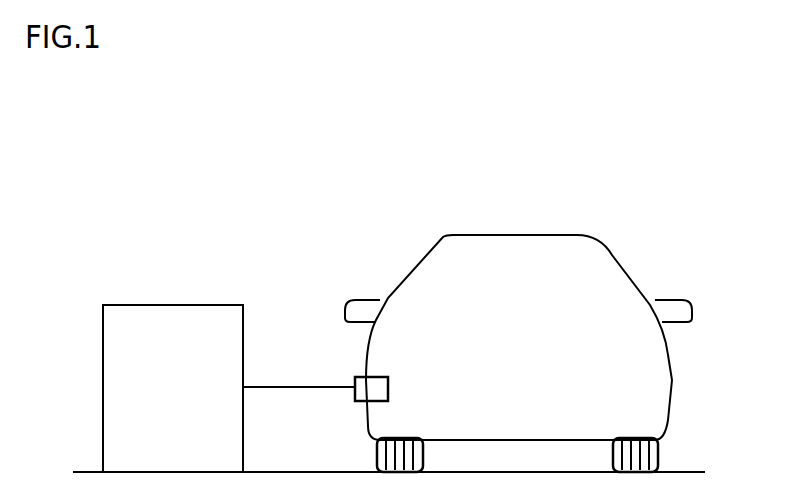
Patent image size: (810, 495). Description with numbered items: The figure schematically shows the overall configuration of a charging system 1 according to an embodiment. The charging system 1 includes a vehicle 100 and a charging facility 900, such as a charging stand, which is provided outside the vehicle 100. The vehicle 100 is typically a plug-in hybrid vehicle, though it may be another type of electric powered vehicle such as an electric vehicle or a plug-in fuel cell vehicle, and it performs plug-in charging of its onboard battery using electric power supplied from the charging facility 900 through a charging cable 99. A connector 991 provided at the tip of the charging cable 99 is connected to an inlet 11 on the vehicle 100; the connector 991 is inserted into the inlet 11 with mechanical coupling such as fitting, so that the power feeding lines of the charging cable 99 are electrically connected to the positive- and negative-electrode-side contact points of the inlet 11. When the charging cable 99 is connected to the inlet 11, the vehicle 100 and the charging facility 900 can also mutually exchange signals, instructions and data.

The charging system 1 is at (244, 173).
The charging facility 900 is at (122, 305).
The charging cable 99 is at (282, 385).
The connector 991 is at (362, 377).
The inlet 11 is at (383, 377).
The vehicle 100 is at (562, 234).